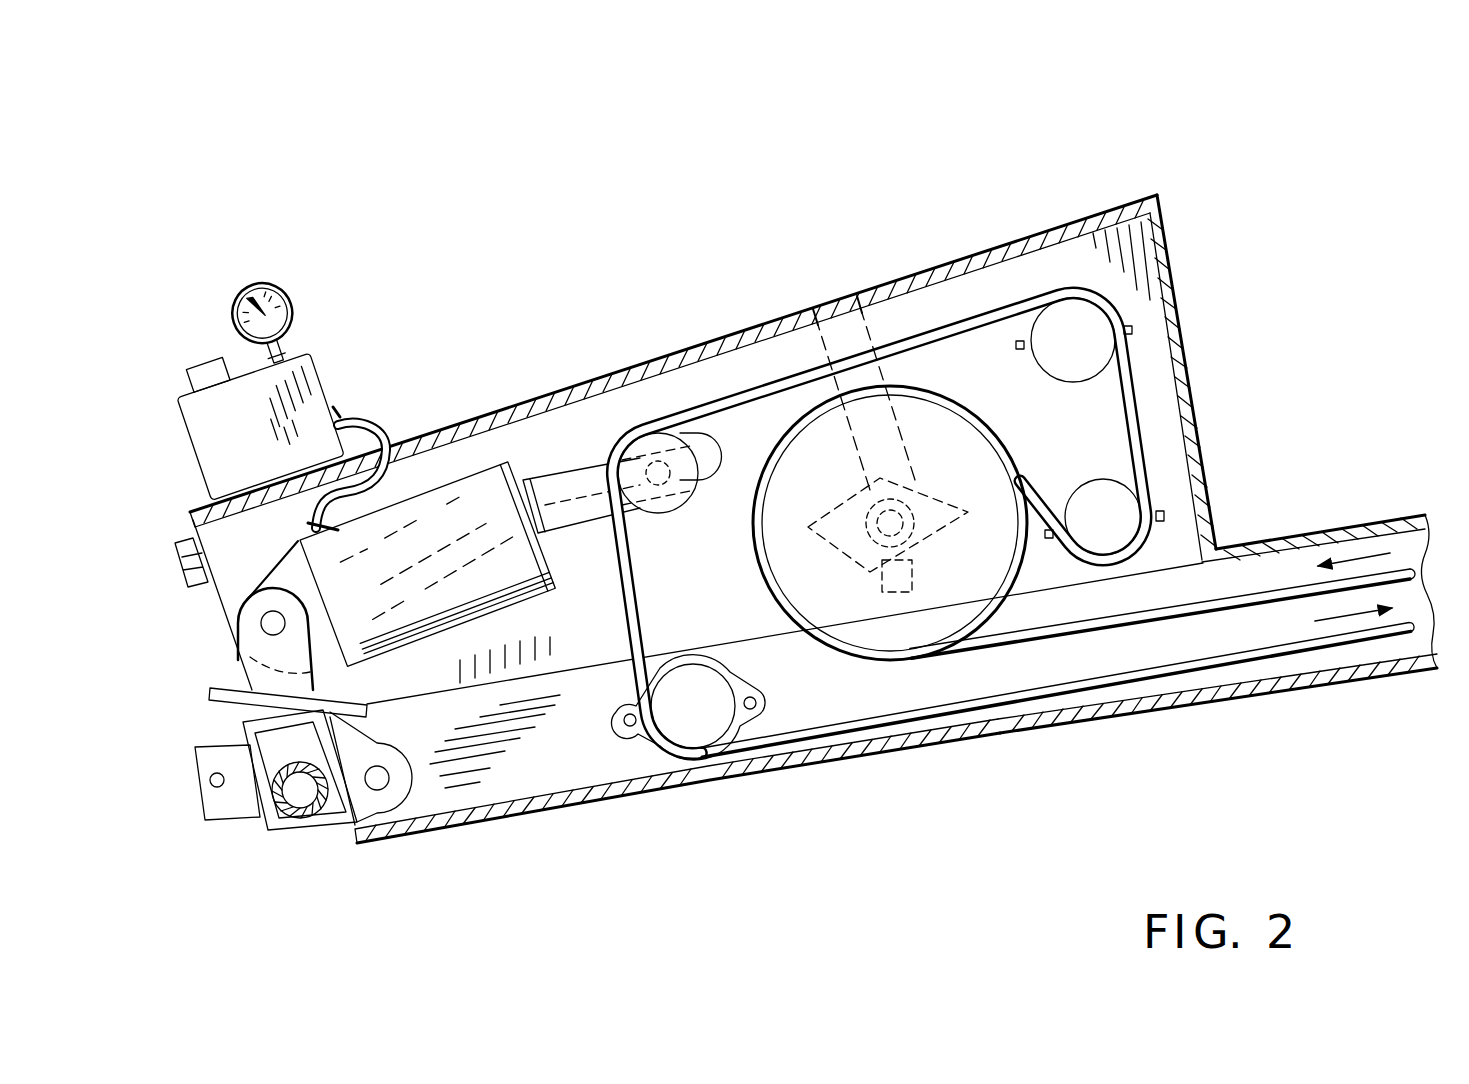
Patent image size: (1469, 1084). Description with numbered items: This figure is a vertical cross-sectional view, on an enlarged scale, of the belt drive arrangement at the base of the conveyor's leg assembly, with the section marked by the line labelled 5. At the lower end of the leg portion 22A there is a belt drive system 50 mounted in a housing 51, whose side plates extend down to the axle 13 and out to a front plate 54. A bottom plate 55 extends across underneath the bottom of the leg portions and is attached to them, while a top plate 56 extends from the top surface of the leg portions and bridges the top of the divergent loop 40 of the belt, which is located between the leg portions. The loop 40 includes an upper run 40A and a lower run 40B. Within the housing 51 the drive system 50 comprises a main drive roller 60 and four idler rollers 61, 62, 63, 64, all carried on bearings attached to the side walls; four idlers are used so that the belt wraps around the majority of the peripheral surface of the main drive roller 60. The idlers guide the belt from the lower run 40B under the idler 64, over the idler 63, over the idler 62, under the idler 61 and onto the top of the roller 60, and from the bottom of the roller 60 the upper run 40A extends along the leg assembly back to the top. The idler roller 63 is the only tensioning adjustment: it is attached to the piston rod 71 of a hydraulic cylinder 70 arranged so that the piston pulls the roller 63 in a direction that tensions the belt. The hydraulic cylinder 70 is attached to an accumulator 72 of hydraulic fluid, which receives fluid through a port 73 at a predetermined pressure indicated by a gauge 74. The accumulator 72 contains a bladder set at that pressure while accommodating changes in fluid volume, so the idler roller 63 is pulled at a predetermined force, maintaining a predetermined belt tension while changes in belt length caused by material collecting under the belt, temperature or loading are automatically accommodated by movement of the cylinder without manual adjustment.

The section line 5- 5 is at (836, 246).
The axle 13 is at (290, 828).
The leg portion 22A is at (540, 766).
The divergent loop 40 is at (1258, 633).
The upper run 40A is at (1253, 584).
The lower run 40B is at (1113, 680).
The belt drive system 50 is at (1148, 385).
The housing 51 is at (1096, 198).
The front plate 54 is at (1180, 291).
The bottom plate 55 is at (993, 738).
The top plate 56 is at (1381, 521).
The main drive roller 60 is at (956, 446).
The idler roller 61 is at (1103, 496).
The idler roller 62 is at (1062, 339).
The idler roller 63 is at (671, 505).
The idler roller 64 is at (692, 692).
The hydraulic cylinder 70 is at (465, 478).
The piston rod 71 is at (573, 478).
The accumulator 72 is at (327, 367).
The port 73 is at (212, 372).
The gauge 74 is at (264, 283).